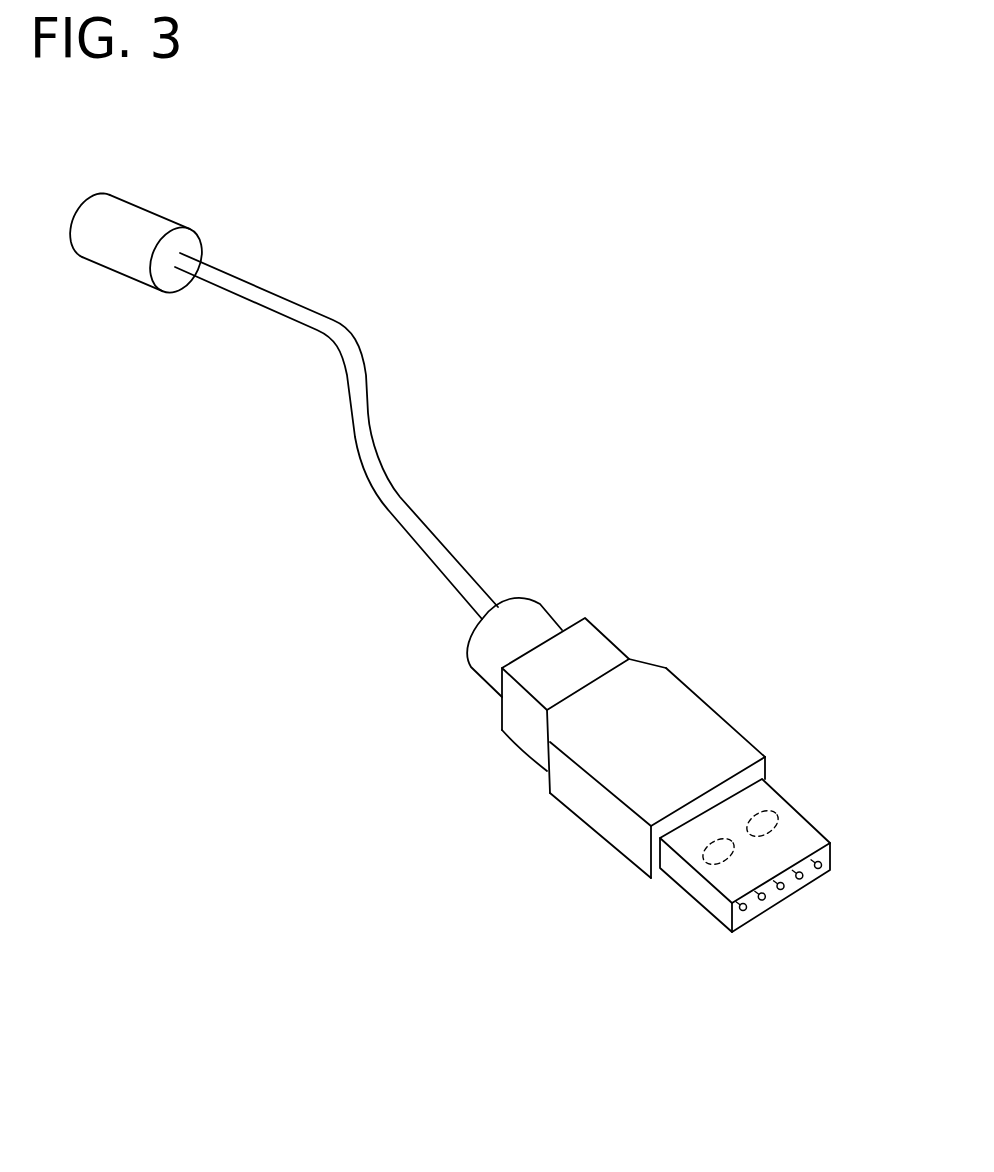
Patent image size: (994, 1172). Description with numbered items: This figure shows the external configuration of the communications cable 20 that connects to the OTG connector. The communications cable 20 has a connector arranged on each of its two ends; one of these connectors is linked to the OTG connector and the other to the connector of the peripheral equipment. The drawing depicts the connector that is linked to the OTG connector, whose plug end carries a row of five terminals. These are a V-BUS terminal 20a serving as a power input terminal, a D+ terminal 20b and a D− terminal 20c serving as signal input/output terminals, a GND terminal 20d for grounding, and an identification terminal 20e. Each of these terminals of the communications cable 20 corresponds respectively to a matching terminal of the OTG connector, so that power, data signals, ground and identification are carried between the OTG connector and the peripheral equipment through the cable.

The communications cable 20 is at (719, 585).
The V-BUS terminal 20a is at (744, 911).
The D+ terminal 20b is at (762, 900).
The D− terminal 20c is at (782, 890).
The GND terminal 20d is at (800, 879).
The identification terminal 20e is at (818, 868).